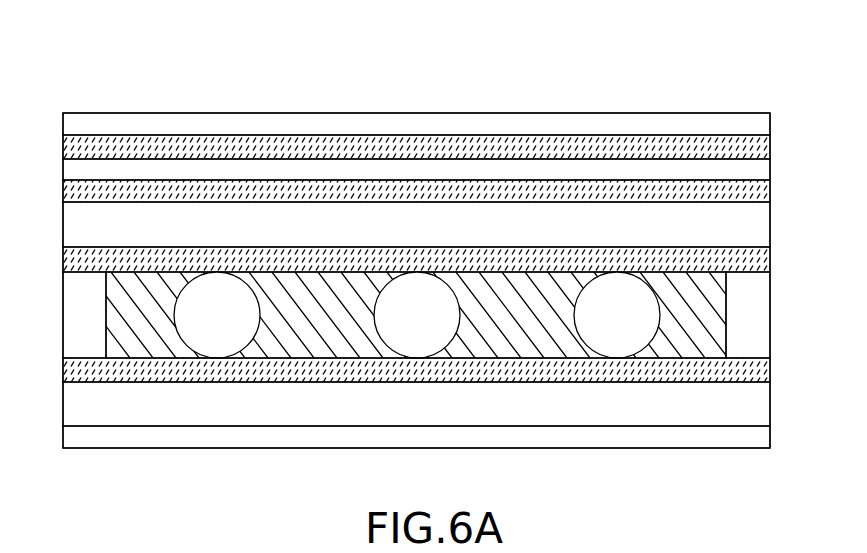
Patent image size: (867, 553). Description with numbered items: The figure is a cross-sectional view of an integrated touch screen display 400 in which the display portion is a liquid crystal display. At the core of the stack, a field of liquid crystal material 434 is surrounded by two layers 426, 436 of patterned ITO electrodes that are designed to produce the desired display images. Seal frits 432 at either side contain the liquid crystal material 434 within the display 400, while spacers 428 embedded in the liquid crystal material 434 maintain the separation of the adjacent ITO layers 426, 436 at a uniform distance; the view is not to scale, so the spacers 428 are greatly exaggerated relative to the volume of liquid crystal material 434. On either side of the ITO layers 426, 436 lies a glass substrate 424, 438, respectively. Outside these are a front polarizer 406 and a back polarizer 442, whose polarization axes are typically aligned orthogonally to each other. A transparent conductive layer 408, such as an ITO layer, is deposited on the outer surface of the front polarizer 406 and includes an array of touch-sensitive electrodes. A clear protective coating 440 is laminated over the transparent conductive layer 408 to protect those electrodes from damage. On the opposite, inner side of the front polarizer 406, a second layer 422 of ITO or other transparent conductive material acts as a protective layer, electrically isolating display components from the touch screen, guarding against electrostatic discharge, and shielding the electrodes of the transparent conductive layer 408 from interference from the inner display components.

The integrated touch screen display 400 is at (272, 76).
The clear protective coating 440 is at (415, 113).
The transparent conductive layer 408 is at (555, 148).
The front polarizer 406 is at (771, 157).
The second layer of ITO 422 is at (771, 190).
The glass substrate 424 is at (771, 222).
The layer of patterned ITO electrodes 426 is at (771, 260).
The spacers 428 is at (200, 325).
The seal frits 432 is at (62, 317).
The liquid crystal material 434 is at (540, 337).
The layer of patterned ITO electrodes 436 is at (771, 375).
The glass substrate 438 is at (771, 415).
The back polarizer 442 is at (771, 437).